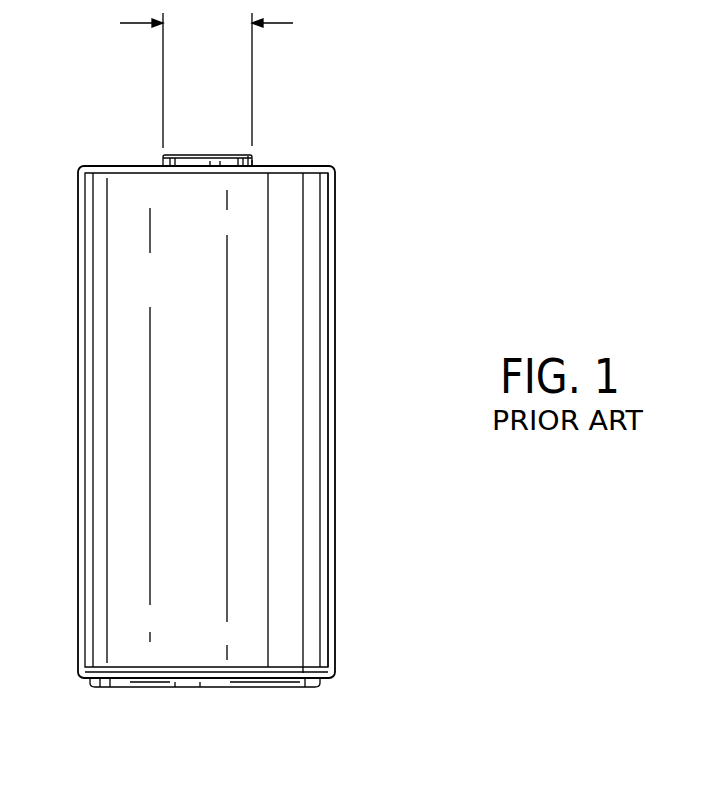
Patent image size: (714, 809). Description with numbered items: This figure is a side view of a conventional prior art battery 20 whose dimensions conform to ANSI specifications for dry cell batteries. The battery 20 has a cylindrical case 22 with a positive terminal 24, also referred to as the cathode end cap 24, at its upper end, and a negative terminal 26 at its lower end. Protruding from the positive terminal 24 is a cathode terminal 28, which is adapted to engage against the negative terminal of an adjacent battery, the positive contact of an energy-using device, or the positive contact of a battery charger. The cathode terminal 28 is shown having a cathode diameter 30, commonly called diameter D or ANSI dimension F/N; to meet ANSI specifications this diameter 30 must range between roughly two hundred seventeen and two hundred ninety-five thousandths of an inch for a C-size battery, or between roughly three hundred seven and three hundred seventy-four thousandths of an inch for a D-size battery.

The conventional battery 20 is at (340, 446).
The cylindrical case 22 is at (335, 302).
The positive terminal 24 is at (160, 150).
The negative terminal 26 is at (217, 689).
The cathode terminal 28 is at (252, 156).
The cathode diameter 30 is at (206, 78).